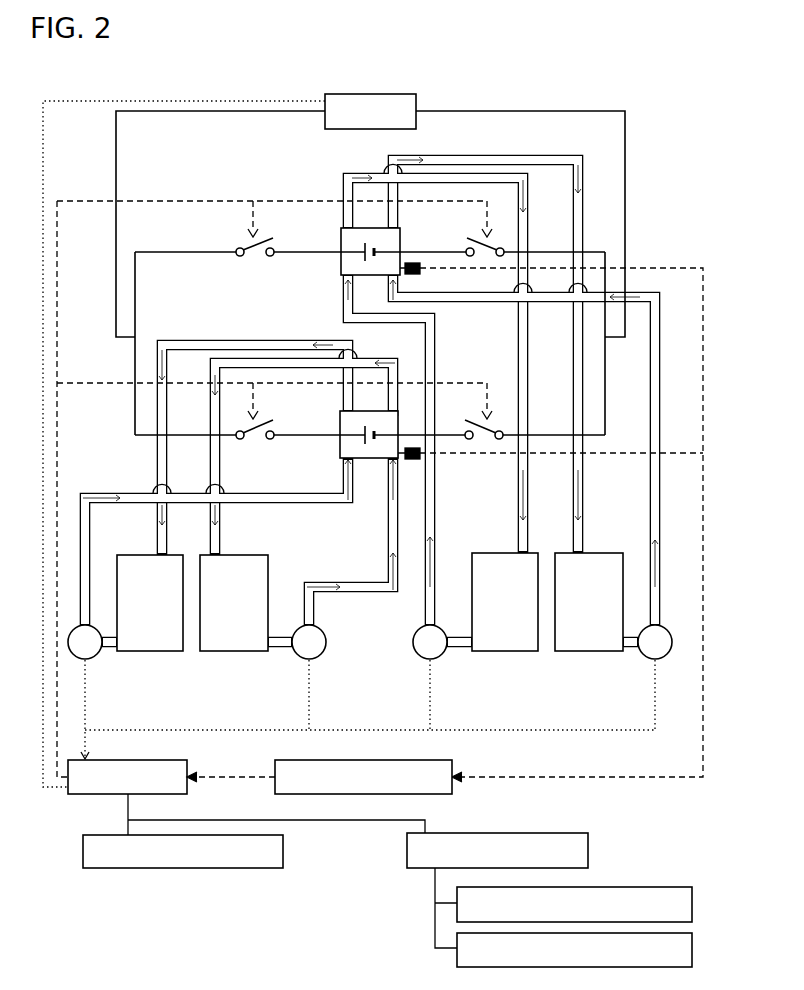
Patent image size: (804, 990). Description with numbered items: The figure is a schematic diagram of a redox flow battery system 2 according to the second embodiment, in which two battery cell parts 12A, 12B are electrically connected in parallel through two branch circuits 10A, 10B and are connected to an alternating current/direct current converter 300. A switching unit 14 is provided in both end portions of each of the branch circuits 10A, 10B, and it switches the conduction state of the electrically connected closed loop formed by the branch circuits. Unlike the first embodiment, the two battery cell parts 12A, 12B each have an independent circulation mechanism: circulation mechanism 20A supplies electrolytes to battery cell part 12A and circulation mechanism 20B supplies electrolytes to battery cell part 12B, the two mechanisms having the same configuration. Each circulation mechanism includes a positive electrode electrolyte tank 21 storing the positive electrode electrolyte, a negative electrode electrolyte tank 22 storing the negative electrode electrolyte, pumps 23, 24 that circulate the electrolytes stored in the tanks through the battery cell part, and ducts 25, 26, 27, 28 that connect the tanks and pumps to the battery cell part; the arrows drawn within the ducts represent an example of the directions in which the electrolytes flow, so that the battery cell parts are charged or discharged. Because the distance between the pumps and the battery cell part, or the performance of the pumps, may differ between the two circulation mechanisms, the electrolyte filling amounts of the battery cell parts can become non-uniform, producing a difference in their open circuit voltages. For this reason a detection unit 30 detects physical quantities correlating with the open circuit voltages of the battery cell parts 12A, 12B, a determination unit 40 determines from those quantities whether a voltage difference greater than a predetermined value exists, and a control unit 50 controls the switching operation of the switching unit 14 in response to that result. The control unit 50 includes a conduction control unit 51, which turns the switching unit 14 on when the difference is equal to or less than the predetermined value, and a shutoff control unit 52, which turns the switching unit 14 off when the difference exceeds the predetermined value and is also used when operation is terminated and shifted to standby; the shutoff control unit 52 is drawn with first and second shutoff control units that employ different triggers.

The redox flow battery system 2 is at (659, 147).
The alternating current/direct current converter 300 is at (417, 95).
The branch circuit 10A is at (588, 251).
The branch circuit 10B is at (553, 434).
The battery cell part 12A is at (341, 262).
The battery cell part 12B is at (363, 461).
The switching unit 14 is at (239, 248).
The detection unit 30 is at (418, 276).
The circulation mechanism 20A is at (550, 662).
The circulation mechanism 20B is at (198, 662).
The positive electrode electrolyte tank 21 is at (150, 652).
The negative electrode electrolyte tank 22 is at (234, 652).
The pump 23 is at (93, 658).
The pump 24 is at (318, 656).
The duct 25 is at (86, 492).
The duct 26 is at (360, 581).
The duct 27 is at (156, 535).
The duct 28 is at (221, 535).
The determination unit 40 is at (455, 764).
The control unit 50 is at (70, 795).
The conduction control unit 51 is at (284, 852).
The shutoff control unit 52 is at (589, 850).